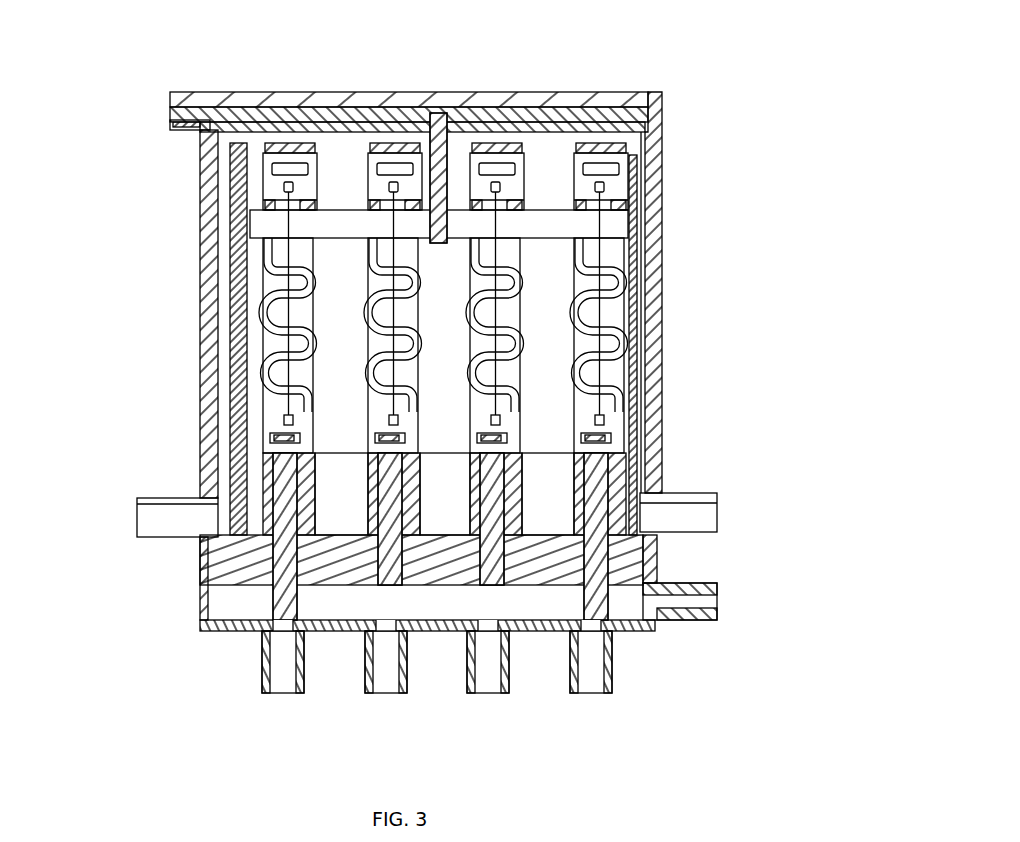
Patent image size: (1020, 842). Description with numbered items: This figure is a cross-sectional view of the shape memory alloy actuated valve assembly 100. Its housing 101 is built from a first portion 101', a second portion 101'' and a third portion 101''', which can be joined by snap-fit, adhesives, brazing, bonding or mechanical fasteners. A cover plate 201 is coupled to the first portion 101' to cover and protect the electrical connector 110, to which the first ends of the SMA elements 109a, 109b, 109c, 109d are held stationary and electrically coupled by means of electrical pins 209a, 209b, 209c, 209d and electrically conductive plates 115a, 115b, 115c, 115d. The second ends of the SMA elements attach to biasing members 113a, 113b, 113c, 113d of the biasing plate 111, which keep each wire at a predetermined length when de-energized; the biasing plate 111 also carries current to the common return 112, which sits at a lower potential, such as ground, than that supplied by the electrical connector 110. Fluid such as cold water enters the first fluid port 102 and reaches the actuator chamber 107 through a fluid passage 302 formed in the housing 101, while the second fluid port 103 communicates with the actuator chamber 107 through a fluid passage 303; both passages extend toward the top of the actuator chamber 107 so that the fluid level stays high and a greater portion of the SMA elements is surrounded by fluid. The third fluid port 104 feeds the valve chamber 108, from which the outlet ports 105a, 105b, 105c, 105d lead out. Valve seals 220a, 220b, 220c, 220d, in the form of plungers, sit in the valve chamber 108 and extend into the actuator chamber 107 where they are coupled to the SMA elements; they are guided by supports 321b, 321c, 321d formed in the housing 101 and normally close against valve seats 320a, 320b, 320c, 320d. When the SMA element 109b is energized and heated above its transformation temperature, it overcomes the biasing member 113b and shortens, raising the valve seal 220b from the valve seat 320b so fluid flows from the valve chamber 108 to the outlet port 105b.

The SMA actuated valve assembly 100 is at (708, 56).
The housing 101 is at (484, 290).
The first portion 101' is at (175, 314).
The second portion 101'' is at (390, 560).
The third portion 101''' is at (159, 578).
The first fluid port 102 is at (137, 517).
The second fluid port 103 is at (717, 508).
The third fluid port 104 is at (717, 603).
The outlet port 105a is at (596, 686).
The outlet port 105b is at (492, 686).
The outlet port 105c is at (388, 686).
The outlet port 105d is at (282, 693).
The actuator chamber 107 is at (338, 518).
The valve chamber 108 is at (213, 612).
The SMA element 109a is at (642, 324).
The SMA element 109b is at (520, 325).
The SMA element 109c is at (419, 325).
The SMA element 109d is at (289, 255).
The electrical connector 110 is at (172, 116).
The biasing plate 111 is at (588, 222).
The common return 112 is at (445, 113).
The biasing member 113a is at (651, 345).
The biasing member 113b is at (520, 345).
The biasing member 113c is at (420, 345).
The biasing member 113d is at (304, 337).
The electrically conductive plate 115a is at (651, 284).
The electrically conductive plate 115b is at (524, 284).
The electrically conductive plate 115c is at (370, 284).
The electrically conductive plate 115d is at (268, 182).
The cover plate 201 is at (307, 97).
The electrical pin 209a is at (613, 104).
The electrical pin 209b is at (505, 104).
The electrical pin 209c is at (395, 106).
The electrical pin 209d is at (285, 147).
The valve seal 220a is at (654, 536).
The valve seal 220b is at (519, 519).
The valve seal 220c is at (416, 515).
The valve seal 220d is at (298, 476).
The fluid passage 302 is at (230, 480).
The fluid passage 303 is at (637, 417).
The valve seat 320a is at (638, 644).
The valve seat 320b is at (520, 613).
The valve seat 320c is at (419, 654).
The valve seat 320d is at (282, 620).
The support 321b is at (543, 484).
The support 321c is at (439, 494).
The support 321d is at (303, 504).